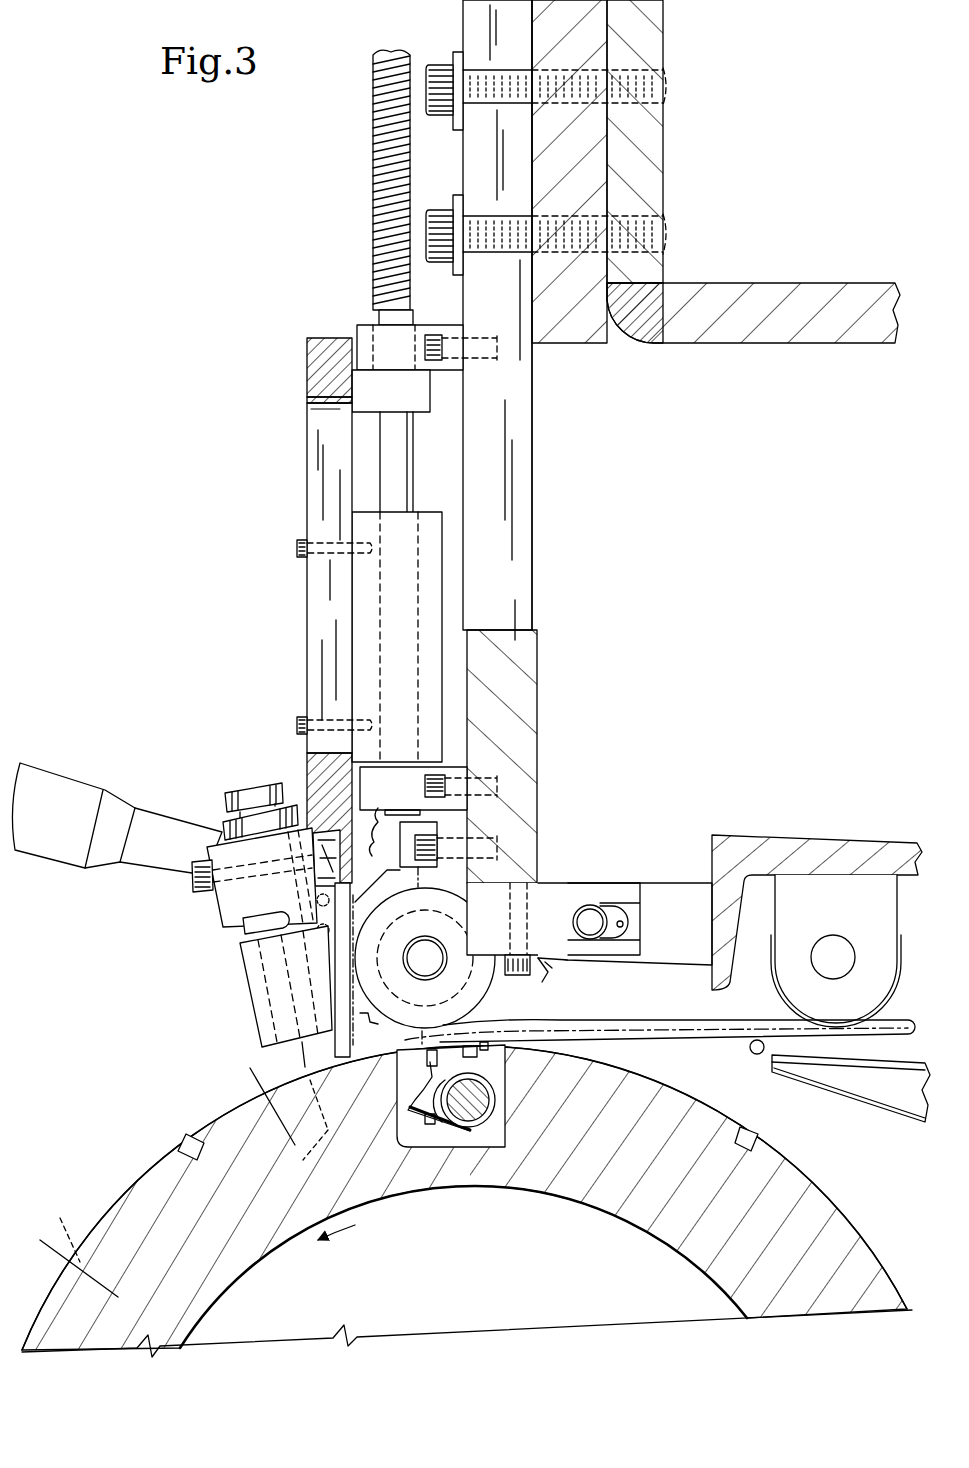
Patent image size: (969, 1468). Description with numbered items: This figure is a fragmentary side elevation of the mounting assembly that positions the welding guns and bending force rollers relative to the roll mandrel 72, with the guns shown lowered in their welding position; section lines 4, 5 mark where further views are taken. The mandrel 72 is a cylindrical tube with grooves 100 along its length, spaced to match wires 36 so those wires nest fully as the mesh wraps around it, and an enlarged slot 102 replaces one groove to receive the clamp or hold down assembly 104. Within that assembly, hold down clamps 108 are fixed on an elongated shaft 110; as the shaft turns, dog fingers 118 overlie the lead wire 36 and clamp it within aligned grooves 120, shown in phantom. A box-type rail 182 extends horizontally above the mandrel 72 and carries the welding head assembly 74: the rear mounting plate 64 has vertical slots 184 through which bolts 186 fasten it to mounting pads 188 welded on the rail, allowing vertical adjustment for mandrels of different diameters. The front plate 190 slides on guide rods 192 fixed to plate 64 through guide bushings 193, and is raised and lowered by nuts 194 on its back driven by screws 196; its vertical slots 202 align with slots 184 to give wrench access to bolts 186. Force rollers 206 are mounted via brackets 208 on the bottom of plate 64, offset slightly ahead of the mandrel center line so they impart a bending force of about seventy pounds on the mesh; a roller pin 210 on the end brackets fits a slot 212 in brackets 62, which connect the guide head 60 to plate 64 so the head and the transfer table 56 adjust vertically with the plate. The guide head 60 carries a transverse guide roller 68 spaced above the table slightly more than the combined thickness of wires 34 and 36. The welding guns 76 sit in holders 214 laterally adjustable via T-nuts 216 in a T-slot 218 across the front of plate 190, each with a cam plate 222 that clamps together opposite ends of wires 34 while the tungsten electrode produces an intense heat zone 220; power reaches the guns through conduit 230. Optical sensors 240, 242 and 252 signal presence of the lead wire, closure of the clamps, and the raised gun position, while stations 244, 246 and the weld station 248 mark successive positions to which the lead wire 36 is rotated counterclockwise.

The section line 4- 4 is at (410, 829).
The section line 5- 5 is at (354, 964).
The wires 34 is at (628, 1020).
The wires 36 is at (752, 1053).
The transfer table 56 is at (890, 1097).
The guide head 60 is at (758, 836).
The brackets 62 is at (680, 884).
The main welding head mounting plate 64 is at (528, 763).
The transverse guide roller 68 is at (897, 957).
The mandrel 72 is at (666, 1187).
The welding head assembly 74 is at (255, 583).
The welding guns 76 is at (203, 932).
The grooves 100 is at (183, 1145).
The enlarged slot 102 is at (400, 1142).
The clamp or hold down assembly 104 is at (467, 1104).
The hold down clamps 108 is at (418, 1100).
The elongated shaft 110 is at (498, 1116).
The dog fingers 118 is at (420, 1062).
The aligned grooves 120 is at (500, 1050).
The box-type rail 182 is at (657, 195).
The vertical slots 184 is at (532, 630).
The bolts 186 is at (512, 108).
The mounting pads 188 is at (592, 335).
The front plate 190 is at (307, 371).
The guide rods 192 is at (407, 494).
The guide bushings 193 is at (360, 628).
The nuts 194 is at (356, 404).
The screws 196 is at (373, 222).
The vertical slots 202 is at (316, 476).
The rollers 206 is at (466, 918).
The brackets 208 is at (547, 884).
The roller pin 210 is at (596, 906).
The slot 212 is at (625, 932).
The holders 214 is at (244, 962).
The T-nuts 216 is at (377, 832).
The T-slot 218 is at (340, 872).
The intense heat zone 220 is at (291, 1053).
The cam plate 222 is at (342, 963).
The conduit 230 is at (84, 790).
The optical sensor device 240 is at (545, 968).
The second optical sensor 242 is at (377, 1015).
The station 244 is at (79, 1238).
The station 246 is at (250, 1082).
The weld station 248 is at (301, 1133).
The optical sensor 252 is at (428, 791).